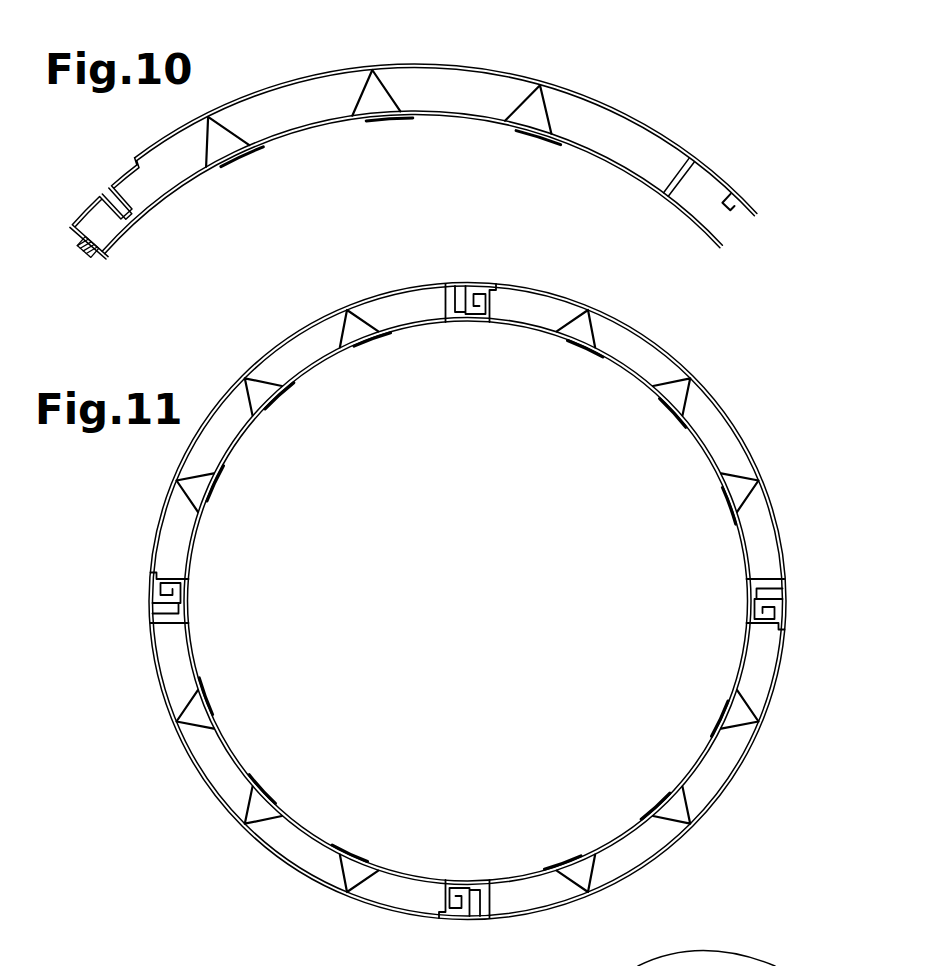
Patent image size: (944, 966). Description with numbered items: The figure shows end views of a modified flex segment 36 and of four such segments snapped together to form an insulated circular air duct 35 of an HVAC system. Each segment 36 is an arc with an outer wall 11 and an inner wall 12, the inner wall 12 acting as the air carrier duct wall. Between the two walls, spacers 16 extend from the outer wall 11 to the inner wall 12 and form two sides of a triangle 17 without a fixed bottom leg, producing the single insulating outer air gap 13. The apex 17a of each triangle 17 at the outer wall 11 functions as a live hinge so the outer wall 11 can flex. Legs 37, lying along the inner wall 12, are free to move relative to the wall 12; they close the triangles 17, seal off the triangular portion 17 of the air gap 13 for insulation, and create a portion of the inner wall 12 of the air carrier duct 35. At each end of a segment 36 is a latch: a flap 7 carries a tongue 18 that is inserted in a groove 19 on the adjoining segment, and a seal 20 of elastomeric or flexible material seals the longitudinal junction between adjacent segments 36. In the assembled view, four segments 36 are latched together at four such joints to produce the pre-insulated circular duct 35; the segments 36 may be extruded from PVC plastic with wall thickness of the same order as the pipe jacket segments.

In FIG. 10, the flap 7 is at (727, 186).
In FIG. 11, the flap 7 is at (470, 292).
In FIG. 10, the outer wall 11 is at (268, 87).
In FIG. 11, the outer wall 11 is at (733, 421).
In FIG. 10, the inner wall 12 is at (636, 180).
In FIG. 11, the inner wall 12 is at (697, 433).
In FIG. 10, the outer air gap 13 is at (322, 70).
In FIG. 11, the outer air gap 13 is at (640, 336).
In FIG. 10, the spacers 16 is at (200, 134).
In FIG. 11, the spacers 16 is at (172, 498).
In FIG. 10, the triangle 17 is at (575, 98).
In FIG. 11, the triangle 17 is at (188, 488).
In FIG. 10, the apex of the triangle 17a is at (374, 64).
In FIG. 10, the tongue 18 is at (733, 207).
In FIG. 10, the groove 19 is at (116, 200).
In FIG. 10, the seal 20 is at (80, 246).
In FIG. 11, the insulated circular air duct 35 is at (774, 455).
In FIG. 10, the modified flex segment 36 is at (562, 50).
In FIG. 11, the modified flex segment 36 is at (254, 347).
In FIG. 10, the legs 37 is at (515, 128).
In FIG. 11, the legs 37 is at (276, 400).